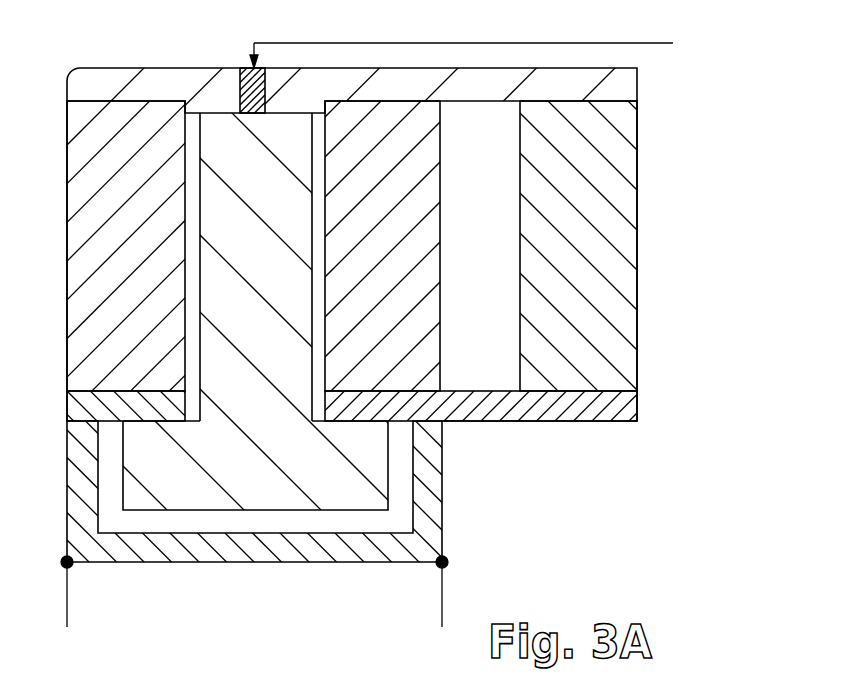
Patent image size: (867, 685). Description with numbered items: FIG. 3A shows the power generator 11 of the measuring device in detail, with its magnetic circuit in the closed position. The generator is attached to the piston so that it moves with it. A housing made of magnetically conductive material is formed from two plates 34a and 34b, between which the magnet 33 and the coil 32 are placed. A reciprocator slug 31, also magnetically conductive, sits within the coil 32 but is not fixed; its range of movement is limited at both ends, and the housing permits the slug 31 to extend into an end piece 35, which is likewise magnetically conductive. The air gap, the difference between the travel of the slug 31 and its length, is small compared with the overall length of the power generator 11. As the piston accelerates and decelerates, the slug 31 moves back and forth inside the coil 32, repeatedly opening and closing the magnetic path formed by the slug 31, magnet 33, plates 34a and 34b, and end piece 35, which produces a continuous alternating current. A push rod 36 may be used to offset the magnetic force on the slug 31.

The power generator 11 is at (718, 90).
The reciprocator slug 31 is at (240, 340).
The coil 32 is at (120, 118).
The magnet 33 is at (628, 282).
The plate 34a is at (568, 412).
The plate 34b is at (537, 85).
The end piece 35 is at (303, 542).
The push rod 36 is at (243, 95).